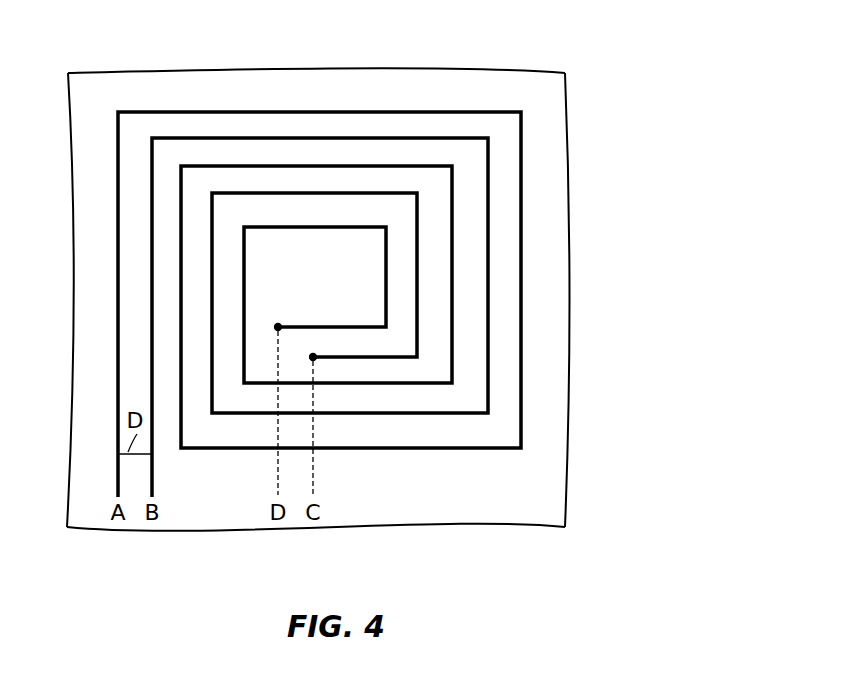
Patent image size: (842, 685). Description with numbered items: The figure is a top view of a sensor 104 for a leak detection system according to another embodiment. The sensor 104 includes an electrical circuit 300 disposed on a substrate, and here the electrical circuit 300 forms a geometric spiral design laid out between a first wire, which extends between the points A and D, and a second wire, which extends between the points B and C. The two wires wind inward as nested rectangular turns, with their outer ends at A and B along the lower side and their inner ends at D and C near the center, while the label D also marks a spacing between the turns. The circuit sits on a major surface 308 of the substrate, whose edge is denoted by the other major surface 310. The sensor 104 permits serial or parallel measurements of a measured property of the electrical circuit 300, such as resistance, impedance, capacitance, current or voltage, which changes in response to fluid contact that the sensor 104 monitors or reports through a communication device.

The sensor 104 is at (379, 286).
The electrical circuit 300 is at (193, 123).
The major surface 308 is at (558, 223).
The major surface 310 is at (580, 161).